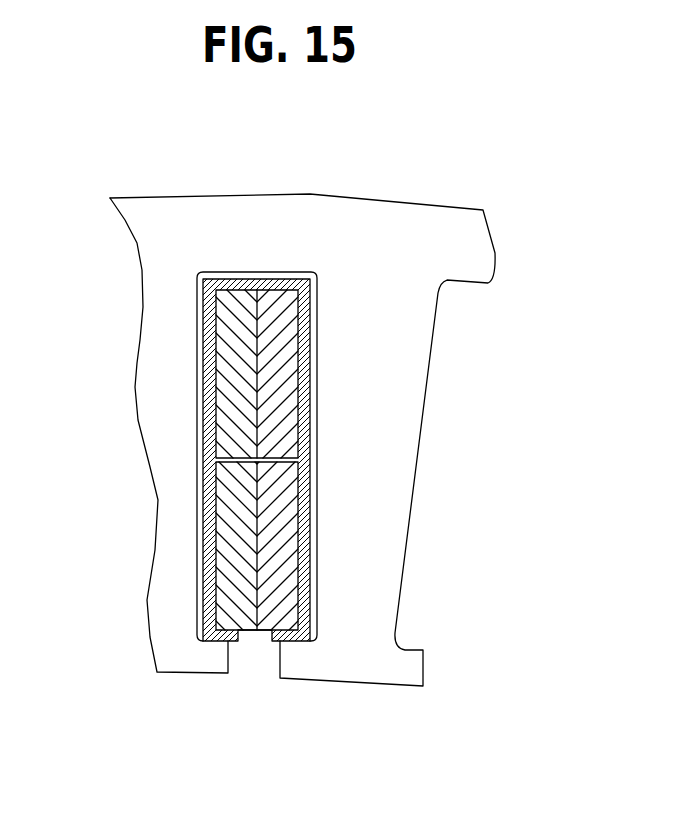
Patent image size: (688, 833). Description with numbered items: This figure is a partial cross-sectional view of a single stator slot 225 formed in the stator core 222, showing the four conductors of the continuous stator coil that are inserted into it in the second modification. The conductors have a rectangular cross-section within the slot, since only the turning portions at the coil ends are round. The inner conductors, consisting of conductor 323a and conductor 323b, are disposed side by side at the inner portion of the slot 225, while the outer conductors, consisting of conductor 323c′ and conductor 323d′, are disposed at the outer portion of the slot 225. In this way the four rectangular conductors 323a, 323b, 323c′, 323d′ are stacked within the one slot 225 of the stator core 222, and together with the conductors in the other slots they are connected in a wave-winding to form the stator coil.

The stator core 222 is at (313, 207).
The stator slot 225 is at (218, 273).
The conductor 323a is at (213, 583).
The conductor 323b is at (285, 558).
The conductor 323c′ is at (203, 358).
The conductor 323d′ is at (280, 350).